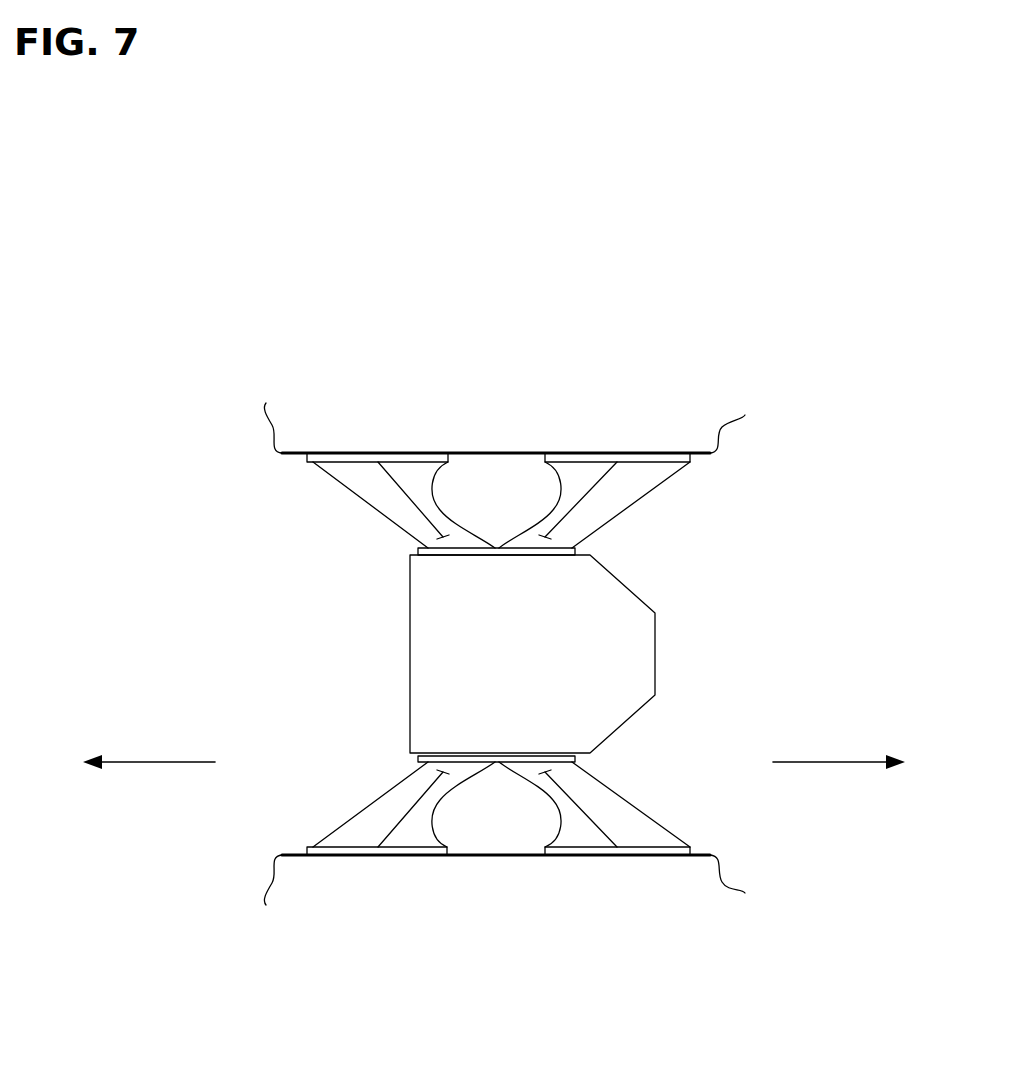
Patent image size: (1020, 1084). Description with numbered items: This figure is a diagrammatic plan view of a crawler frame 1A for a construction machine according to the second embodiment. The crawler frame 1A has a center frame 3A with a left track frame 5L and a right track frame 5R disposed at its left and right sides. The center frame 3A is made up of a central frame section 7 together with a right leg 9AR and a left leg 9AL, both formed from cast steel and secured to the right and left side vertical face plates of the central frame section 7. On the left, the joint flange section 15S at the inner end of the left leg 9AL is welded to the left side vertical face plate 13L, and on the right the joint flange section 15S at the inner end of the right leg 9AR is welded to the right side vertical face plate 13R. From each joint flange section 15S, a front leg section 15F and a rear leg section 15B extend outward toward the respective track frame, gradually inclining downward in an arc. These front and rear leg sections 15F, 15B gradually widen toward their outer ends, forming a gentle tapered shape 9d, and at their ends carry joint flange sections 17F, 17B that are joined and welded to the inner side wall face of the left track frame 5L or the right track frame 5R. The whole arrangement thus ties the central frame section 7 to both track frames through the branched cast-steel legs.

The crawler frame 1A is at (288, 637).
The center frame 3A is at (777, 583).
The right track frame 5R is at (660, 437).
The left track frame 5L is at (732, 868).
The central frame section 7 is at (633, 667).
The right leg 9AR is at (523, 539).
The left leg 9AL is at (510, 774).
The tapered shape 9d is at (357, 478).
The right side vertical face plate 13R is at (412, 552).
The left side vertical face plate 13L is at (420, 767).
The front leg section 15F is at (412, 514).
The rear leg section 15B is at (586, 529).
The joint flange section 15S is at (487, 558).
The joint flange section 17F is at (393, 456).
The joint flange section 17B is at (603, 456).